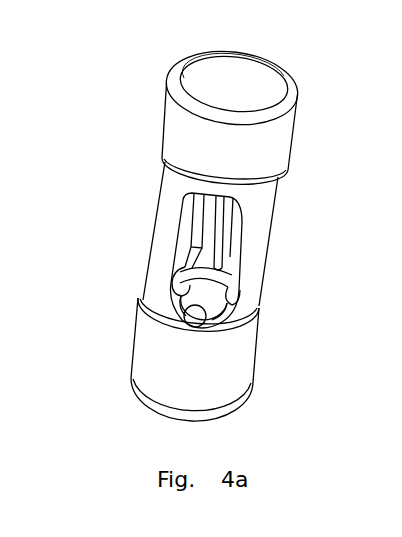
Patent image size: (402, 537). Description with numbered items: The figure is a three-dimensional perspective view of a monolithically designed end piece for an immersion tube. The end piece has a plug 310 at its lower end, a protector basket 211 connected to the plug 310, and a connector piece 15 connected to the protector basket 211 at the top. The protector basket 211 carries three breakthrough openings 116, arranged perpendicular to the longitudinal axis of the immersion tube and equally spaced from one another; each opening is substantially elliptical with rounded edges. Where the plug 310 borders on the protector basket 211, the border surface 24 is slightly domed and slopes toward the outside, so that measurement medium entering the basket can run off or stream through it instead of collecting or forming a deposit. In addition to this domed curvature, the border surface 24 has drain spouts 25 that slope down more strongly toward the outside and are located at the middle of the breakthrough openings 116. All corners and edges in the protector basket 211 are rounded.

The connector piece 15 is at (180, 128).
The breakthrough openings 116 is at (237, 217).
The protector basket 211 is at (143, 234).
The border surface 24 is at (198, 299).
The drain spouts 25 is at (197, 318).
The plug 310 is at (203, 372).